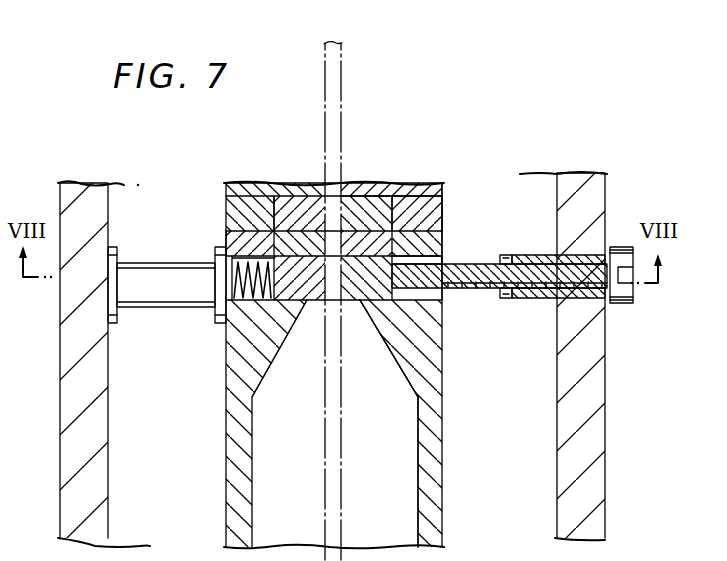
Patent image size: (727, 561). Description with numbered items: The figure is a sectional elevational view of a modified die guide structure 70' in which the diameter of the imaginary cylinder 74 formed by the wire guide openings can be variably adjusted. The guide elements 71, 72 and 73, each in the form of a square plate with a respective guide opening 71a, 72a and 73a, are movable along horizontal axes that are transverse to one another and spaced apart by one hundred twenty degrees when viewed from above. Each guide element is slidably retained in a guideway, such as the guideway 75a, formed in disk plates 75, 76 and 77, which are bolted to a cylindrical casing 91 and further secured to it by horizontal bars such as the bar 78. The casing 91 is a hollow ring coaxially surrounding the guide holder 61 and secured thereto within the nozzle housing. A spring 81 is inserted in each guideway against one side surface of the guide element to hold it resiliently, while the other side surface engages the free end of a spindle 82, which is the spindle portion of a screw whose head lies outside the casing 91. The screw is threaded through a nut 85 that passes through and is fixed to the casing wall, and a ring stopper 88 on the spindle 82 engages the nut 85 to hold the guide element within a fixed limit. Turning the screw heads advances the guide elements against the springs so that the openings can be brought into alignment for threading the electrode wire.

The guide holder 61 is at (440, 452).
The guide structure 70' is at (479, 204).
The guide element 71 is at (403, 372).
The guide opening 71a is at (343, 267).
The guide element 72 is at (387, 222).
The guide opening 72a is at (320, 252).
The guide element 73 is at (382, 240).
The guide opening 73a is at (317, 220).
The imaginary cylinder 74 is at (343, 122).
The disk plate 75 is at (212, 277).
The guideway 75a is at (423, 262).
The disk plate 76 is at (230, 240).
The disk plate 77 is at (228, 218).
The horizontal bar 78 is at (146, 307).
The spring 81 is at (247, 300).
The spindle 82 is at (620, 250).
The nut 85 is at (586, 300).
The ring stopper 88 is at (505, 298).
The cylindrical casing 91 is at (562, 396).